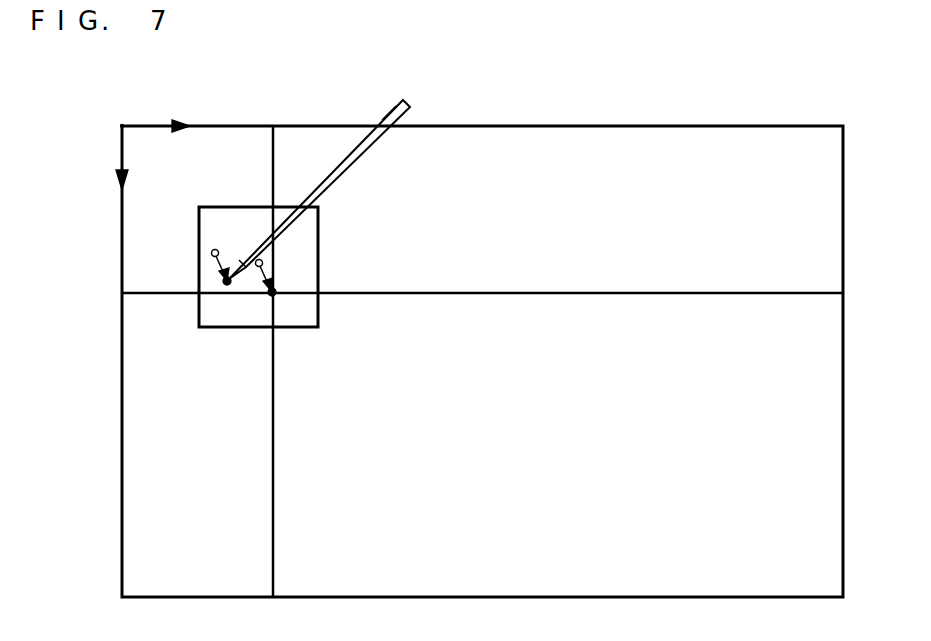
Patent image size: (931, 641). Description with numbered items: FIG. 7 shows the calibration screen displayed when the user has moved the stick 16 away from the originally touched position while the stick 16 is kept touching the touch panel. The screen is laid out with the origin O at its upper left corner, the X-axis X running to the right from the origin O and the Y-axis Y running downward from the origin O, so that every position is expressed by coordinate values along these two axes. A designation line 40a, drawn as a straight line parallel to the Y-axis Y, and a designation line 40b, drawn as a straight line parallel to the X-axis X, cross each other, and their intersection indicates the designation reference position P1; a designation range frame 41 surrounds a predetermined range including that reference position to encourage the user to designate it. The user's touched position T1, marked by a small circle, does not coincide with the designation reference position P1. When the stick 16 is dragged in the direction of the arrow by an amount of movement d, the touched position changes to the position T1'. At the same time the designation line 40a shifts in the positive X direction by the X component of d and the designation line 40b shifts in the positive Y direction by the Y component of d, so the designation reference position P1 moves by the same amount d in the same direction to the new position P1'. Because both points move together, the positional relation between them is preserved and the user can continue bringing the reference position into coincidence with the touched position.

The stick 16 is at (400, 99).
The designation range frame 41 is at (215, 207).
The designation line 40a is at (273, 422).
The designation line 40b is at (410, 293).
The touched position T1 is at (182, 243).
The touched position after movement T1' is at (188, 301).
The designation reference position P1 is at (307, 248).
The moved designation reference position P1' is at (318, 320).
The amount of movement d is at (220, 267).
The origin O is at (113, 115).
The X-axis X is at (181, 115).
The Y-axis Y is at (109, 183).